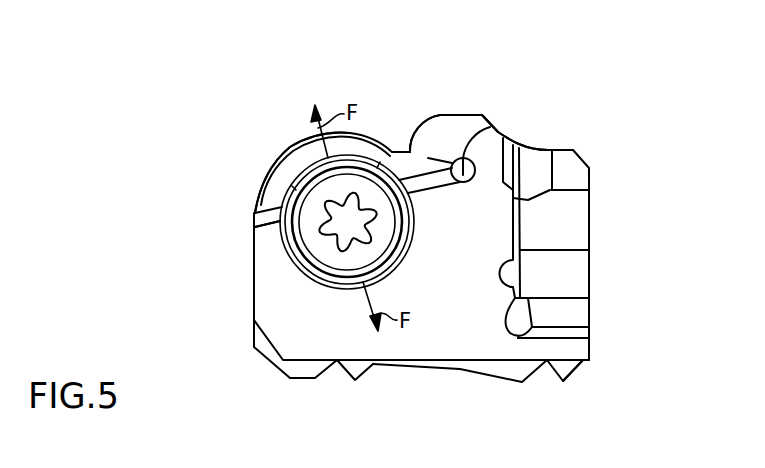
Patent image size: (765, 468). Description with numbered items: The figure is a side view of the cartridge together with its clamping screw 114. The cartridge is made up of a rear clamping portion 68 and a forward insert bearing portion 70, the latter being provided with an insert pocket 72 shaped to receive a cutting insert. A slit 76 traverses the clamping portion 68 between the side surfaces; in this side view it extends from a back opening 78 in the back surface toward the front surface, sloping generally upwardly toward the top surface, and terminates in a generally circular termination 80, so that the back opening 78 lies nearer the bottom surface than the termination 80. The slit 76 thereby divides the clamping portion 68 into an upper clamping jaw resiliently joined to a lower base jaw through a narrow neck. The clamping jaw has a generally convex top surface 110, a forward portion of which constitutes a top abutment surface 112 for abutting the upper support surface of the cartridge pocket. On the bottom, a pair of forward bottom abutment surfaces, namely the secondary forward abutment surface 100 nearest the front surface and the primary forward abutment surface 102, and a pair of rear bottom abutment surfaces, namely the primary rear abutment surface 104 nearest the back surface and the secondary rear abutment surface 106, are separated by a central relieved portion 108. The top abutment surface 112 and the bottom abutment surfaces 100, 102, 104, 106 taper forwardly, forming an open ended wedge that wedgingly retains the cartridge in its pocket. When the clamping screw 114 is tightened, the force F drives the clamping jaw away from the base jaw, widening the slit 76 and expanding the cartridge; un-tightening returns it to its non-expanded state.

The rear clamping portion 68 is at (375, 100).
The forward insert bearing portion 70 is at (527, 103).
The insert pocket 72 is at (563, 210).
The slit 76 is at (253, 220).
The back opening 78 is at (258, 226).
The generally circular termination 80 is at (490, 127).
The secondary forward abutment surface 100 is at (567, 382).
The primary forward abutment surface 102 is at (540, 372).
The primary rear abutment surface 104 is at (327, 373).
The secondary rear abutment surface 106 is at (363, 367).
The central relieved portion 108 is at (430, 373).
The top surface of the clamping jaw 110 is at (275, 165).
The top abutment surface 112 is at (390, 148).
The clamping screw 114 is at (312, 235).